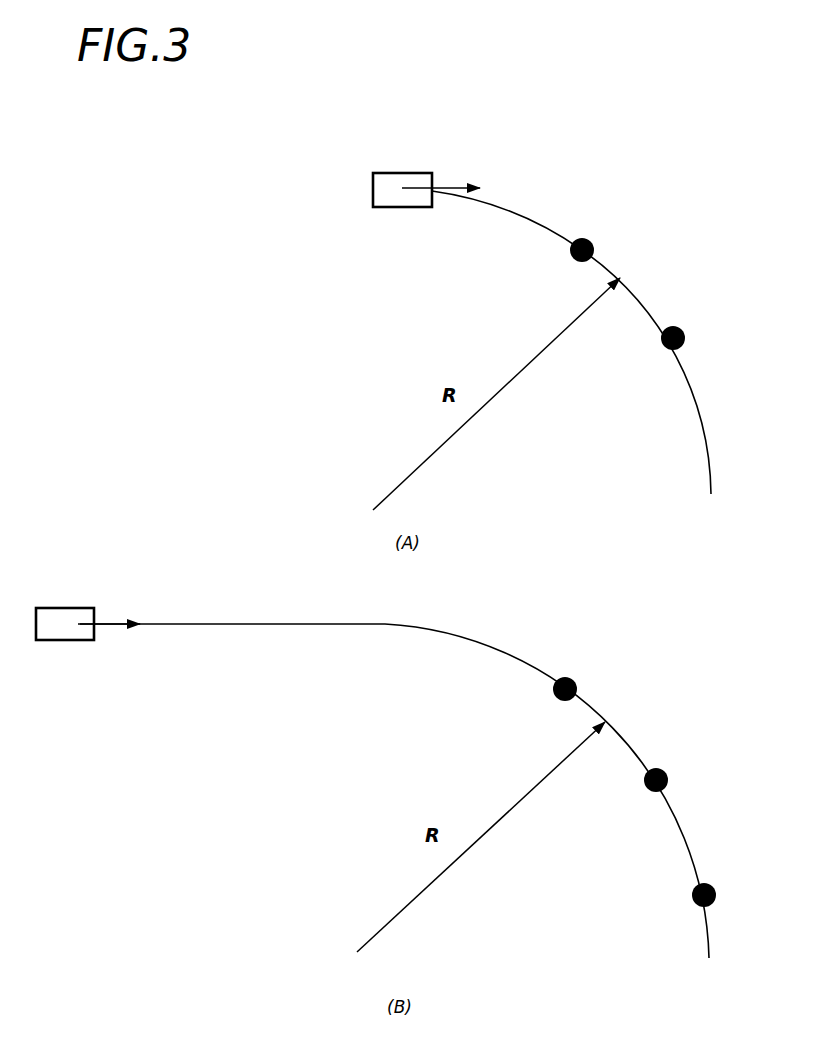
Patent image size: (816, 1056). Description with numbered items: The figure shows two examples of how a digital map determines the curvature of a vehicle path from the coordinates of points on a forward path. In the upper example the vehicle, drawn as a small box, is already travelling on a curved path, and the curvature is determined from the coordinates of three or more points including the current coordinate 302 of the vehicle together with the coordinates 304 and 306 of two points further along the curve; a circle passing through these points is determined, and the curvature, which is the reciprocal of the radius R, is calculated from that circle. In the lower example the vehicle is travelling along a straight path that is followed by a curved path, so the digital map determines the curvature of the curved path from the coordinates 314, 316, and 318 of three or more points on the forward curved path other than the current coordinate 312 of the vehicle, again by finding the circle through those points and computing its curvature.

In FIG. 3A, the current coordinate of the vehicle 302 is at (398, 176).
In FIG. 3A, the coordinate of a point on the vehicle path 304 is at (588, 237).
In FIG. 3A, the coordinate of a point on the vehicle path 306 is at (677, 326).
In FIG. 3B, the current coordinate of the vehicle 312 is at (59, 612).
In FIG. 3B, the coordinate of a point on the forward curved path 314 is at (568, 676).
In FIG. 3B, the coordinate of a point on the forward curved path 316 is at (657, 767).
In FIG. 3B, the coordinate of a point on the forward curved path 318 is at (705, 882).